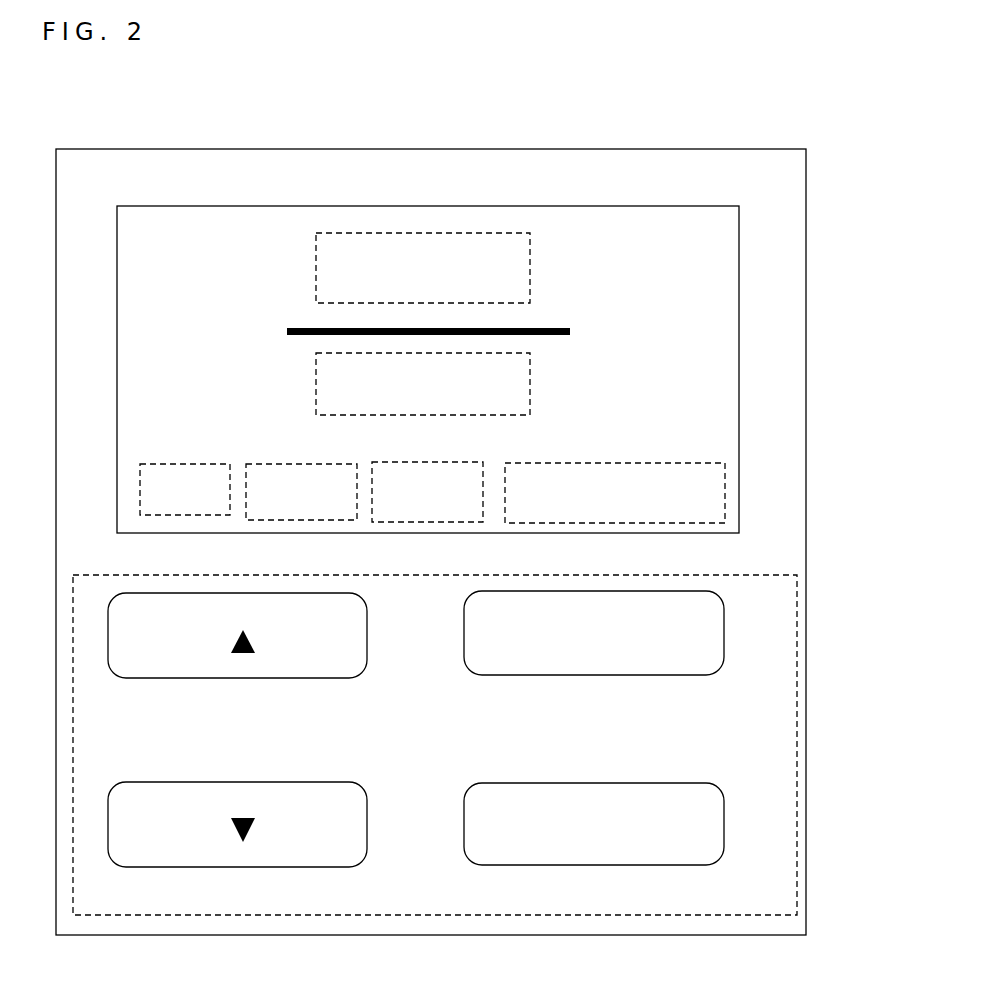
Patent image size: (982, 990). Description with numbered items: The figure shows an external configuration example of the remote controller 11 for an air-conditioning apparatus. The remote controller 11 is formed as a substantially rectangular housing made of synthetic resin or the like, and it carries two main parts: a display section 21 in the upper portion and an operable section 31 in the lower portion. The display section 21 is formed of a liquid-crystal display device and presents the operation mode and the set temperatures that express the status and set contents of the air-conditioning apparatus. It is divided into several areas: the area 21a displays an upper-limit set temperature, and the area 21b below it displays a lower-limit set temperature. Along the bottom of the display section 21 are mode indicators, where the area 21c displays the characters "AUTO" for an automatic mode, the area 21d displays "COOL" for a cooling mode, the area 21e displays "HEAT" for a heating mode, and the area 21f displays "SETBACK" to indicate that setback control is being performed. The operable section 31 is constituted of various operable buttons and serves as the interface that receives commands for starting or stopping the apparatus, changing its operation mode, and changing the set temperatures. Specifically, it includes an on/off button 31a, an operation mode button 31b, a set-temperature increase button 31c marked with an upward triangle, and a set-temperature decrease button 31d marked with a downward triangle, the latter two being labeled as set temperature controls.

The remote controller 11 is at (632, 149).
The display section 21 is at (739, 305).
The area 21a is at (530, 257).
The area 21b is at (530, 374).
The area 21c is at (147, 463).
The area 21d is at (277, 463).
The area 21e is at (387, 462).
The area 21f is at (555, 463).
The operable section 31 is at (775, 577).
The on/off button 31a is at (584, 675).
The operation mode button 31b is at (626, 865).
The set-temperature increase button 31c is at (367, 647).
The set-temperature decrease button 31d is at (367, 826).